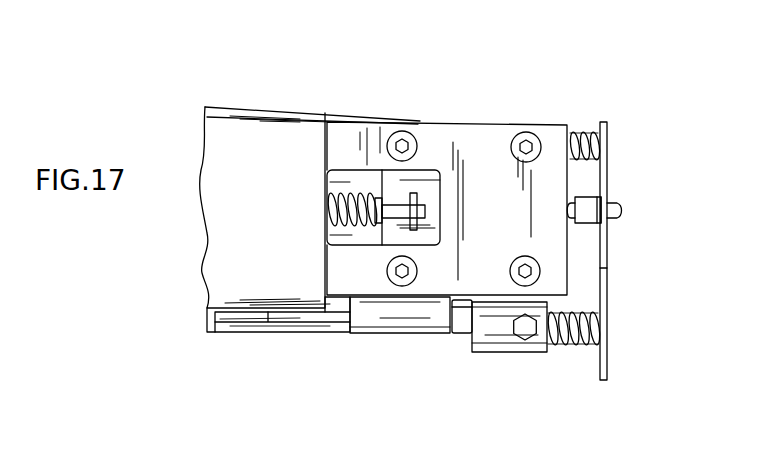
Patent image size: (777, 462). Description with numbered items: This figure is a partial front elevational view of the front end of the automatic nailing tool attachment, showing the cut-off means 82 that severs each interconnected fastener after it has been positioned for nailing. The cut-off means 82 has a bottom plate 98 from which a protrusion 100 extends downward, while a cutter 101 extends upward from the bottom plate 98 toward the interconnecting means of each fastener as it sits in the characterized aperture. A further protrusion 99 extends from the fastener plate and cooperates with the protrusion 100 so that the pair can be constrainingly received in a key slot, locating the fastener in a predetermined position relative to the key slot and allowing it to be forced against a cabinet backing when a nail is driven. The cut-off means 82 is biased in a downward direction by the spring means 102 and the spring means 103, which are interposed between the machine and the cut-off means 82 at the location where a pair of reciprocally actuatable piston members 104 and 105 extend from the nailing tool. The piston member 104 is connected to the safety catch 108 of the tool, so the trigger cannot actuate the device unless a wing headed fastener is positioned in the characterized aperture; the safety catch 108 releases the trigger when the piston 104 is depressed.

The cut-off means 82 is at (612, 303).
The bottom plate 98 is at (602, 248).
The protrusion 99 is at (580, 226).
The protrusion 100 is at (623, 212).
The cutter 101 is at (597, 197).
The spring means 102 is at (572, 132).
The spring means 103 is at (577, 343).
The reciprocally actuatable piston member 104 is at (560, 343).
The reciprocally actuatable piston member 105 is at (592, 133).
The safety catch 108 is at (420, 320).